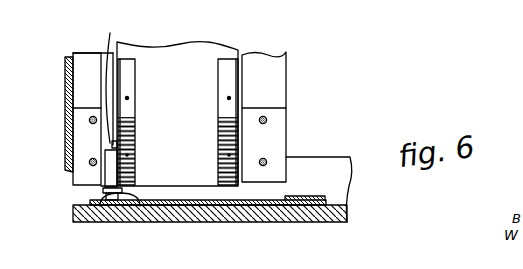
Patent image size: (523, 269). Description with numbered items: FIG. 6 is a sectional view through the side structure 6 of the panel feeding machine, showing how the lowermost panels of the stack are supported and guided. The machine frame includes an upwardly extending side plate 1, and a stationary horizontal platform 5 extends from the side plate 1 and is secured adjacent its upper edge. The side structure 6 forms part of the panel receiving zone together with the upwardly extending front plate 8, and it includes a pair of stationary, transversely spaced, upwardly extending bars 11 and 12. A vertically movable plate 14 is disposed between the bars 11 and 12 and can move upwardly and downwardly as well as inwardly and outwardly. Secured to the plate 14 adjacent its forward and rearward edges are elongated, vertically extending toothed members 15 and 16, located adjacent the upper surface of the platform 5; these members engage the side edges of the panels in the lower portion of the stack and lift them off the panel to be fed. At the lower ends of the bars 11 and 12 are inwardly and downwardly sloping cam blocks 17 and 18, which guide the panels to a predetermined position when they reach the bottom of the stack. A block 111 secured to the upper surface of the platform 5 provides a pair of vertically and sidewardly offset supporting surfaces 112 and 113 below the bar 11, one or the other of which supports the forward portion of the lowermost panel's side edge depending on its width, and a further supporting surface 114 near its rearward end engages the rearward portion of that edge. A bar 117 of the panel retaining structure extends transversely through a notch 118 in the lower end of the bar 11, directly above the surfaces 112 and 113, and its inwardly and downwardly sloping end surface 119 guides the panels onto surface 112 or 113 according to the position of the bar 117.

The side plate 1 is at (307, 158).
The stationary horizontal platform 5 is at (235, 223).
The side structure 6 is at (158, 45).
The front plate 8 is at (68, 88).
The bar 11 is at (82, 62).
The bar 12 is at (267, 60).
The vertically movable plate 14 is at (186, 61).
The toothed member 15 is at (127, 110).
The toothed member 16 is at (227, 107).
The cam block 17 is at (82, 160).
The cam block 18 is at (272, 134).
The block 111 is at (327, 205).
The supporting surface 112 is at (102, 203).
The supporting surface 113 is at (141, 208).
The supporting surface 114 is at (296, 200).
The bar 117 is at (116, 143).
The notch 118 is at (113, 81).
The end surface 119 is at (108, 162).